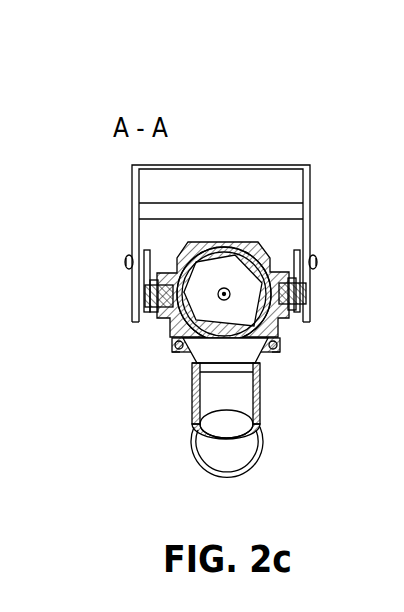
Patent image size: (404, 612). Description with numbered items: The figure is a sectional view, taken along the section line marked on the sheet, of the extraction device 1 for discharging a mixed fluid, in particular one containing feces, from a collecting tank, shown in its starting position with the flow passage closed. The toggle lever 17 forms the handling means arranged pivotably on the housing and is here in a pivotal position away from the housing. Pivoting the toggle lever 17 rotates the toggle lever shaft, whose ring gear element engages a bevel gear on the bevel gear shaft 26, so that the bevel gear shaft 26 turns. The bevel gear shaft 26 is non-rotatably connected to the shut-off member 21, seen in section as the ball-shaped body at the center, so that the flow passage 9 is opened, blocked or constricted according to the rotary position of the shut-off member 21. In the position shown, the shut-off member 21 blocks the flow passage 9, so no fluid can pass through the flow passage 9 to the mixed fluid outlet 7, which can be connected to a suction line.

The extraction device 1 is at (327, 118).
The toggle lever 17 is at (288, 191).
The shut-off member 21 is at (247, 280).
The bevel gear shaft 26 is at (232, 302).
The flow passage 9 is at (238, 390).
The mixed fluid outlet 7 is at (238, 453).